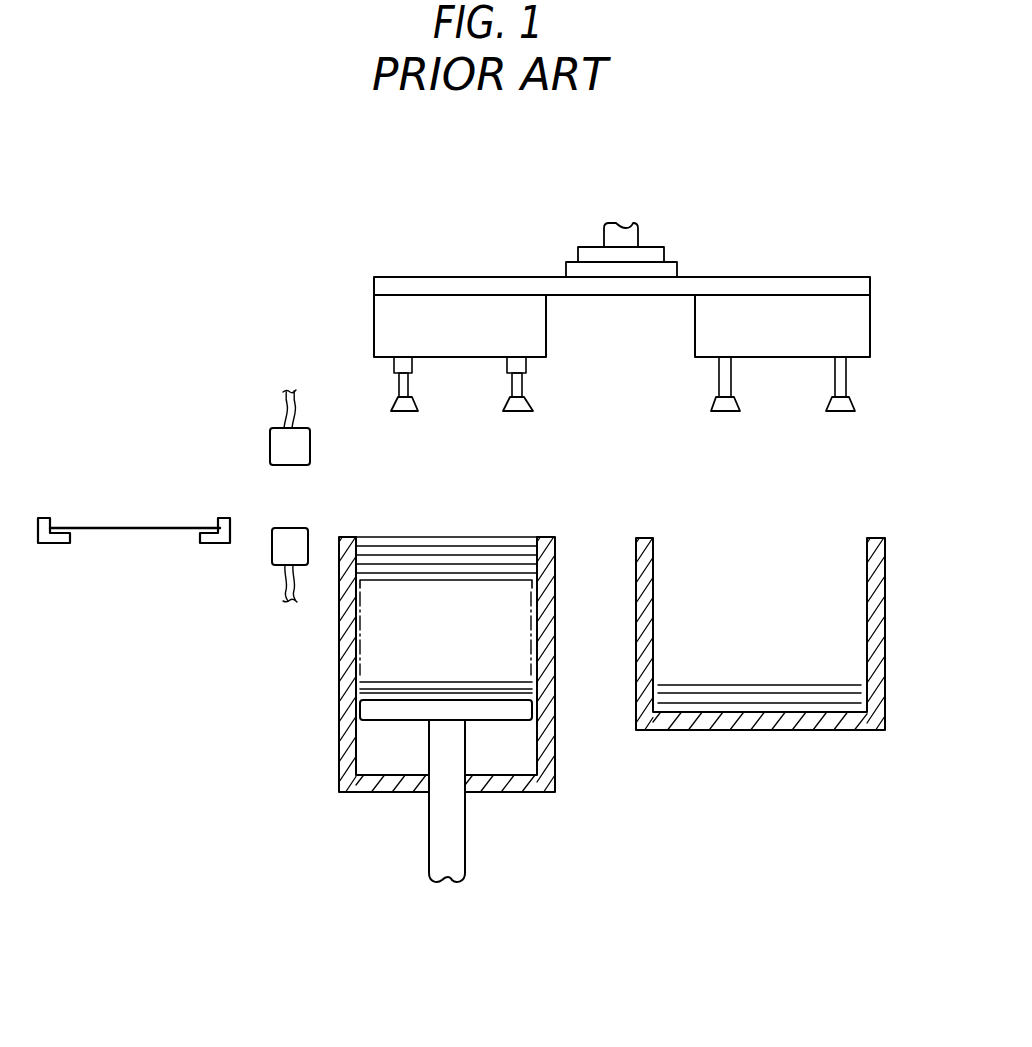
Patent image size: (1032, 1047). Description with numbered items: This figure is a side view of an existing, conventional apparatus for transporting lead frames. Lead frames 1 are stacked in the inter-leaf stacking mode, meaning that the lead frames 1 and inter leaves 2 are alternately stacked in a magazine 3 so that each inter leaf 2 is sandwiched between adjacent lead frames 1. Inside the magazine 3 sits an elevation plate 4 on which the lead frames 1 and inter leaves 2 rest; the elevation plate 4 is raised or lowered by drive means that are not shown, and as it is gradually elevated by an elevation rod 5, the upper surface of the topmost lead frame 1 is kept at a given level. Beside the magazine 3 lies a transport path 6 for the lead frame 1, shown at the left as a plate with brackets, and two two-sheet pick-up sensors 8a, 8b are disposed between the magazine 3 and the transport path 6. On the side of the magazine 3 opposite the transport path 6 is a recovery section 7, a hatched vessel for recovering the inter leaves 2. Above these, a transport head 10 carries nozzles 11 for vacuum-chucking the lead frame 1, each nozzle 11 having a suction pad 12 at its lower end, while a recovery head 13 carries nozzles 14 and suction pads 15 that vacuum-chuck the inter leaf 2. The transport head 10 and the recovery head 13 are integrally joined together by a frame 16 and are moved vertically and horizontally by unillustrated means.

The lead frame 1 is at (107, 527).
The inter leaf 2 is at (519, 562).
The magazine 3 is at (343, 748).
The elevation plate 4 is at (395, 715).
The elevation rod 5 is at (453, 836).
The transport path 6 is at (60, 546).
The recovery section 7 is at (886, 612).
The two-sheet pick-up sensor 8a is at (270, 555).
The two-sheet pick-up sensor 8b is at (268, 433).
The transport head 10 is at (382, 321).
The nozzle 11 is at (398, 386).
The suction pad 12 is at (396, 404).
The recovery head 13 is at (862, 322).
The nozzle 14 is at (842, 374).
The suction pad 15 is at (852, 405).
The frame 16 is at (517, 276).